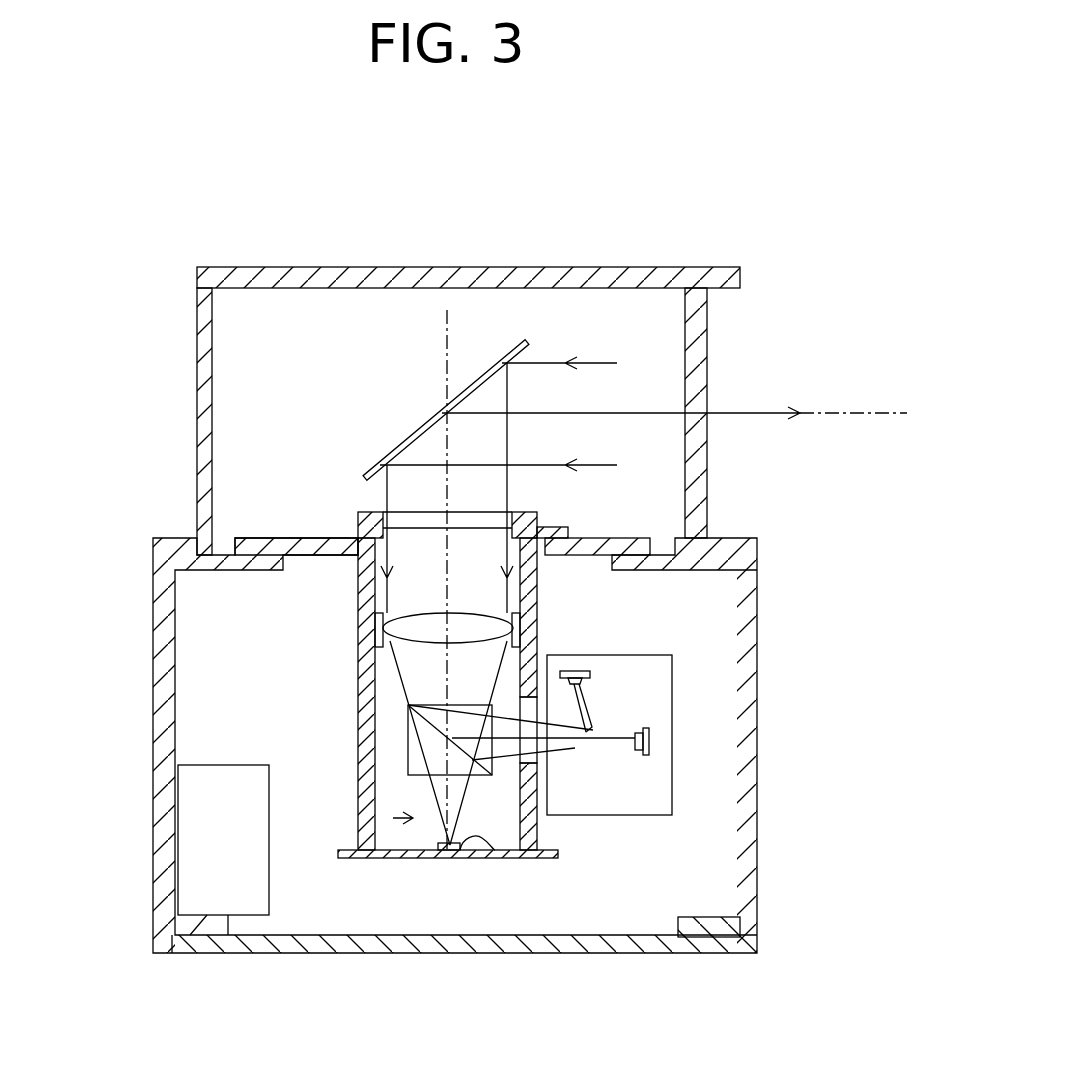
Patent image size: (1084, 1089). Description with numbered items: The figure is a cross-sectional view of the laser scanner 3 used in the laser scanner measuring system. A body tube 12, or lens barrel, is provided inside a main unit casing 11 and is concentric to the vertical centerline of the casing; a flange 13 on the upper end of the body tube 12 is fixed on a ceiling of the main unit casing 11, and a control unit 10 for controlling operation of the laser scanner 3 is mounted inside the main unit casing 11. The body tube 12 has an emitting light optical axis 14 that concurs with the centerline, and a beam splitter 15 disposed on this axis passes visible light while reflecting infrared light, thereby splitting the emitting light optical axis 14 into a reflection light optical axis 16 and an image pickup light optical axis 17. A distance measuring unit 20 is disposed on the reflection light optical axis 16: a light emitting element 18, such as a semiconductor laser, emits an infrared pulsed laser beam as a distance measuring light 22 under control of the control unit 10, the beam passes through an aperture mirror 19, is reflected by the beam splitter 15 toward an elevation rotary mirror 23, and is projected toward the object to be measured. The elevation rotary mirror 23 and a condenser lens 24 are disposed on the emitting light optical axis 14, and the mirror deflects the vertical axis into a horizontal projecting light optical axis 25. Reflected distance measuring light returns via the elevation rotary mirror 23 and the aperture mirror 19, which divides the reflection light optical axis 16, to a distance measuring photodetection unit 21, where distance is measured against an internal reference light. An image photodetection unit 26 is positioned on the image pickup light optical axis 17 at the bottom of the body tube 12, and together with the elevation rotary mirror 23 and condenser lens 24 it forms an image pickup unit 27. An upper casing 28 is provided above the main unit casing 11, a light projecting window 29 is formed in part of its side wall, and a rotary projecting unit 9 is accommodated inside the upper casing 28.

The laser scanner 3 is at (606, 221).
The rotary projecting unit 9 is at (418, 405).
The control unit 10 is at (216, 765).
The main unit casing 11 is at (153, 856).
The body tube 12 is at (360, 660).
The flange 13 is at (283, 537).
The emitting light optical axis 14 is at (452, 558).
The beam splitter 15 is at (408, 705).
The reflection light optical axis 16 is at (608, 737).
The image pickup light optical axis 17 is at (447, 787).
The light emitting element 18 is at (649, 745).
The aperture mirror 19 is at (560, 757).
The distance measuring unit 20 is at (678, 712).
The distance measuring photodetection unit 21 is at (577, 671).
The distance measuring light 22 is at (765, 413).
The elevation rotary mirror 23 is at (410, 433).
The condenser lens 24 is at (413, 613).
The projecting light optical axis 25 is at (845, 418).
The image photodetection unit 26 is at (493, 858).
The image pickup unit 27 is at (393, 818).
The upper casing 28 is at (196, 418).
The light projecting window 29 is at (707, 372).